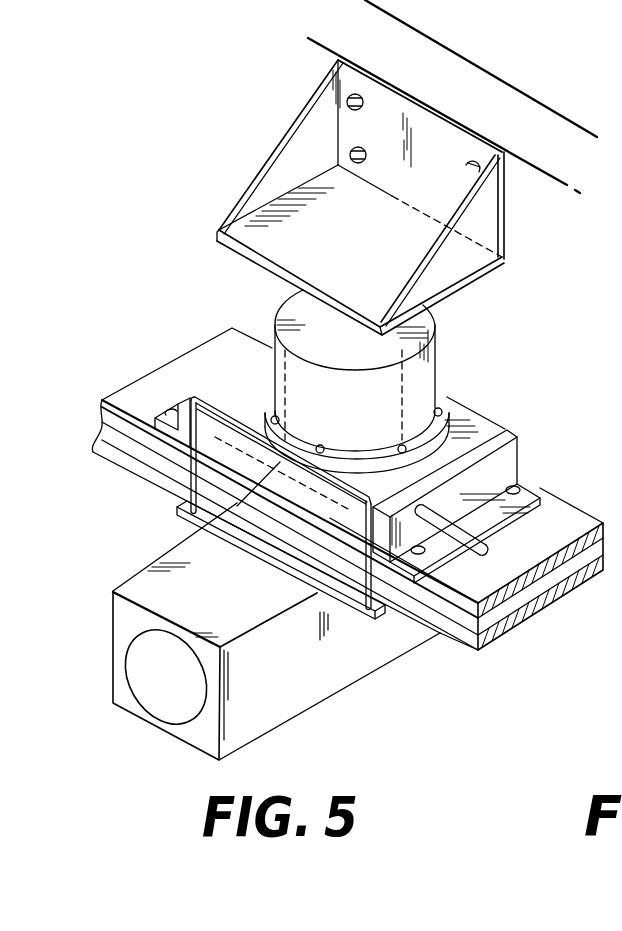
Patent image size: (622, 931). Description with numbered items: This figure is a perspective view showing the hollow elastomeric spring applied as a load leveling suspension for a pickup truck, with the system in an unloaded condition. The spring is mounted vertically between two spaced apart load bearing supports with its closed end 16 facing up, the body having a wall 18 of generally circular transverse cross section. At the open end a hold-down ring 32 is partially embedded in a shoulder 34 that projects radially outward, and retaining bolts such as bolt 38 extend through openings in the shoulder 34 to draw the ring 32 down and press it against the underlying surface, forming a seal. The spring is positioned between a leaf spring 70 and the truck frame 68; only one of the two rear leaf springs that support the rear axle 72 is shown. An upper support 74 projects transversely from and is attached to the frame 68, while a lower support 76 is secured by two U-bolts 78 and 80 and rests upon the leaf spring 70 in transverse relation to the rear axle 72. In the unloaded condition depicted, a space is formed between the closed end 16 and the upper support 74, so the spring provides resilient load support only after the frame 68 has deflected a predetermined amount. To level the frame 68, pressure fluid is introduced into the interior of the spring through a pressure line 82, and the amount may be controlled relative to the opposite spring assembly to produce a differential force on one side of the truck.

The closed end 16 is at (272, 298).
The wall 18 is at (440, 358).
The hold-down ring 32 is at (373, 458).
The shoulder 34 is at (200, 523).
The retaining bolt 38 is at (450, 398).
The frame 68 is at (543, 158).
The leaf spring 70 is at (543, 590).
The rear axle 72 is at (303, 697).
The upper support 74 is at (232, 207).
The lower support 76 is at (517, 438).
The U-bolt 78 is at (489, 430).
The U-bolt 80 is at (210, 397).
The pressure line 82 is at (487, 540).